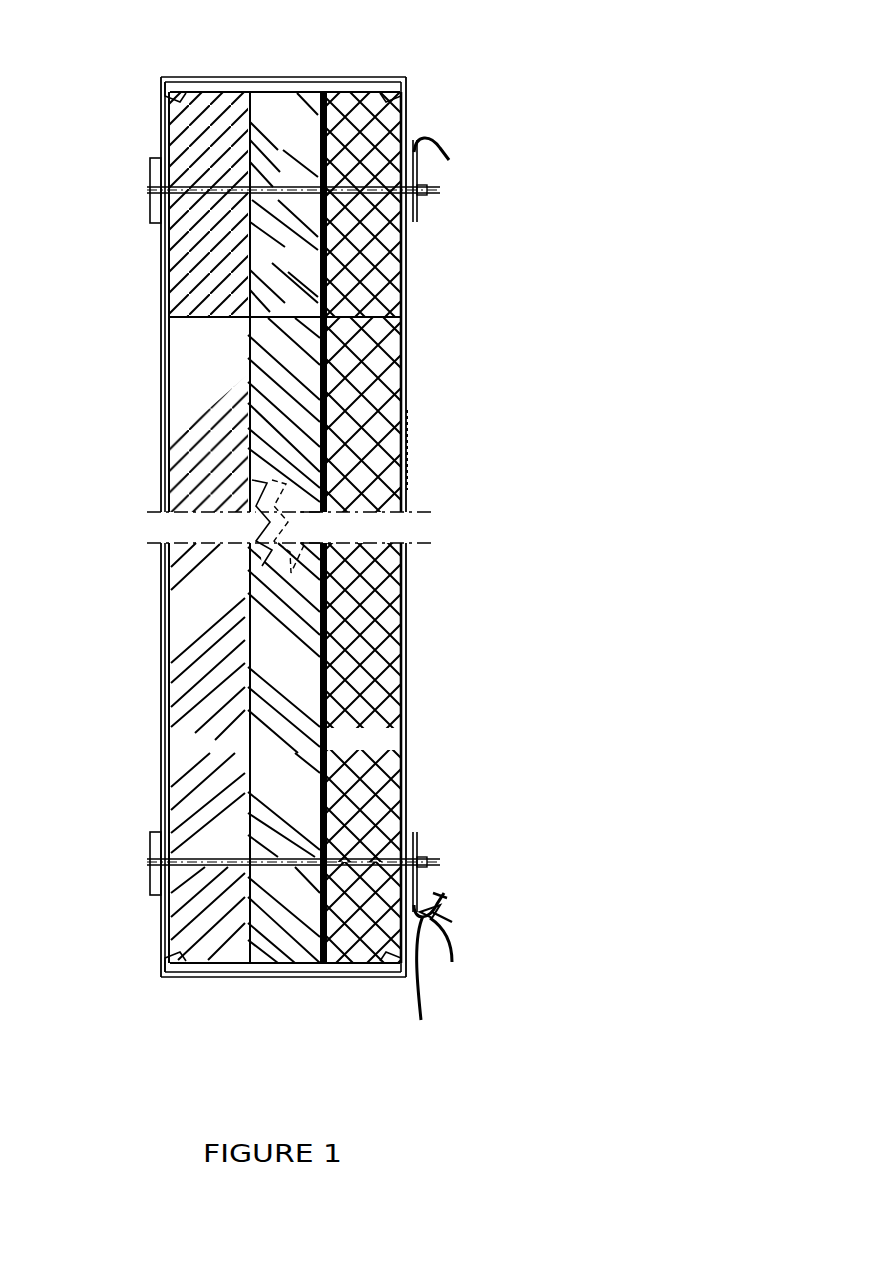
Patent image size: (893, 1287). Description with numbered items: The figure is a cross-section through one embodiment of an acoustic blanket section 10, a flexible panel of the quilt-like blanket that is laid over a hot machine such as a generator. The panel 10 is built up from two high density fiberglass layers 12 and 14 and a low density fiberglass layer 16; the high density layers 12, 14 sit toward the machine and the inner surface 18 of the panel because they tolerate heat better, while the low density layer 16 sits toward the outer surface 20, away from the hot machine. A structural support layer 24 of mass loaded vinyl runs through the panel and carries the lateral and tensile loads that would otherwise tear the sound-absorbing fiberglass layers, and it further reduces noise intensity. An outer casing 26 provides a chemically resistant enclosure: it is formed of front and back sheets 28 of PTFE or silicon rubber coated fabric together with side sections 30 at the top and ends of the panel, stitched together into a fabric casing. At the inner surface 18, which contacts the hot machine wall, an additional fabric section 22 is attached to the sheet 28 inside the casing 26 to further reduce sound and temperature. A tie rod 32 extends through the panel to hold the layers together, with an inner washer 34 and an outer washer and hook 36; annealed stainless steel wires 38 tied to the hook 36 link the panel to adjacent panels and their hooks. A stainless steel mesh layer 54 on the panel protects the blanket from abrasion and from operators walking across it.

The acoustic blanket section 10 is at (552, 532).
The high density fiberglass layer 12 is at (194, 414).
The high density fiberglass layer 14 is at (264, 259).
The low density fiberglass layer 16 is at (382, 636).
The inner surface 18 is at (160, 268).
The outer surface 20 is at (405, 378).
The additional fabric section 22 is at (175, 618).
The structural support layer 24 is at (323, 92).
The outer casing 26 is at (407, 272).
The front and back sheets 28 is at (155, 688).
The side fabric sections 30 is at (204, 77).
The tie rod 32 is at (440, 190).
The inner washer 34 is at (152, 892).
The outer washer and hook 36 is at (428, 142).
The annealed stainless steel wire 38 is at (452, 962).
The stainless steel mesh layer 54 is at (411, 448).